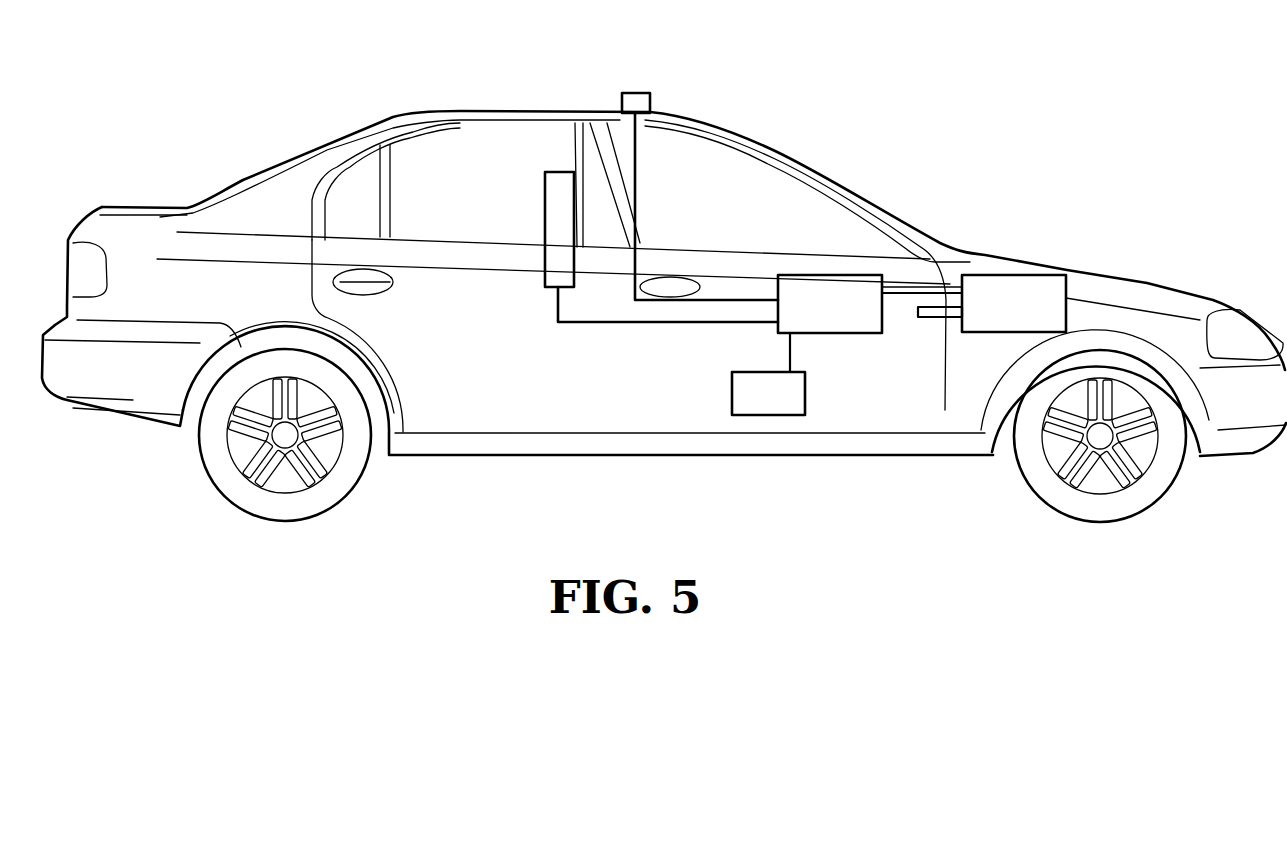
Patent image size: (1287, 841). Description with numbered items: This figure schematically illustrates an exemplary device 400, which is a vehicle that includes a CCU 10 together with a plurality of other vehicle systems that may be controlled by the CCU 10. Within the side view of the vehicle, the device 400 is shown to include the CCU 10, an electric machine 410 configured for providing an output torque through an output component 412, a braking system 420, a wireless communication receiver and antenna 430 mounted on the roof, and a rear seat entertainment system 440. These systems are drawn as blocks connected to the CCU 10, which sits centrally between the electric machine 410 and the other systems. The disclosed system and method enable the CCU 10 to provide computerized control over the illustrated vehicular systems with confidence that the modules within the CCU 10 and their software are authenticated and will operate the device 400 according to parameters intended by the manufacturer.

The device 400 is at (505, 111).
The wireless communication receiver and antenna 430 is at (638, 93).
The rear seat entertainment system 440 is at (545, 212).
The CCU 10 is at (830, 275).
The electric machine 410 is at (1015, 275).
The output component 412 is at (935, 318).
The braking system 420 is at (772, 416).